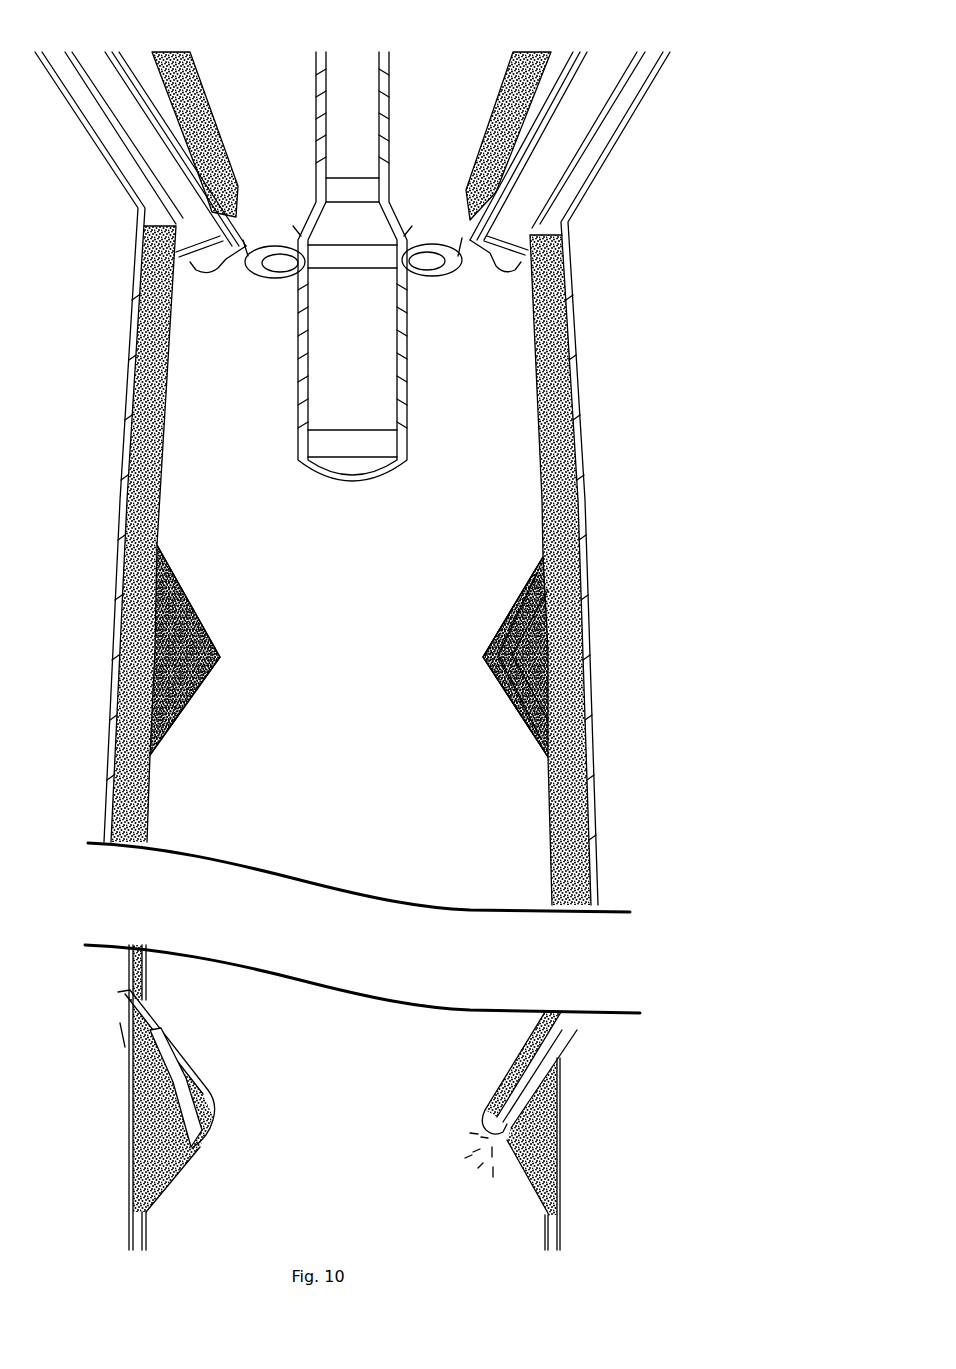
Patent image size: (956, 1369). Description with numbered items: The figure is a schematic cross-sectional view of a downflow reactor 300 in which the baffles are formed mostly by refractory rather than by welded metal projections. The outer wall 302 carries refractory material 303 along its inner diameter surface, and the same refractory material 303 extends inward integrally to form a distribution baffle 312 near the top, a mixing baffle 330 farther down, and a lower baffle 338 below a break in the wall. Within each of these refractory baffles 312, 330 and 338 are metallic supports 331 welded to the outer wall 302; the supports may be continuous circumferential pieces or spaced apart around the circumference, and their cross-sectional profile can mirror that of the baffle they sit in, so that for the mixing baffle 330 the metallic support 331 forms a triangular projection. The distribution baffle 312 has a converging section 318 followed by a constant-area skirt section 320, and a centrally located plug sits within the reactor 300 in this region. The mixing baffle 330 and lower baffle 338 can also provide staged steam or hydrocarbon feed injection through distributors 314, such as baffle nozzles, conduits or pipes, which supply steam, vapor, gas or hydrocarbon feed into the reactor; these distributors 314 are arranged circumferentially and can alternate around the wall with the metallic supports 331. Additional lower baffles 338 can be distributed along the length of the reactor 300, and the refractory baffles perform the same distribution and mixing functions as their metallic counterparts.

The reactor 300 is at (808, 145).
The outer wall 302 is at (582, 335).
The refractory material 303 is at (468, 207).
The distribution baffle 312 is at (464, 128).
The distributors 314 is at (183, 1041).
The converging section 318 is at (210, 128).
The constant-area skirt section 320 is at (243, 193).
The mixing baffle 330 is at (490, 600).
The metallic supports 331 is at (520, 155).
The lower baffle 338 is at (486, 1070).